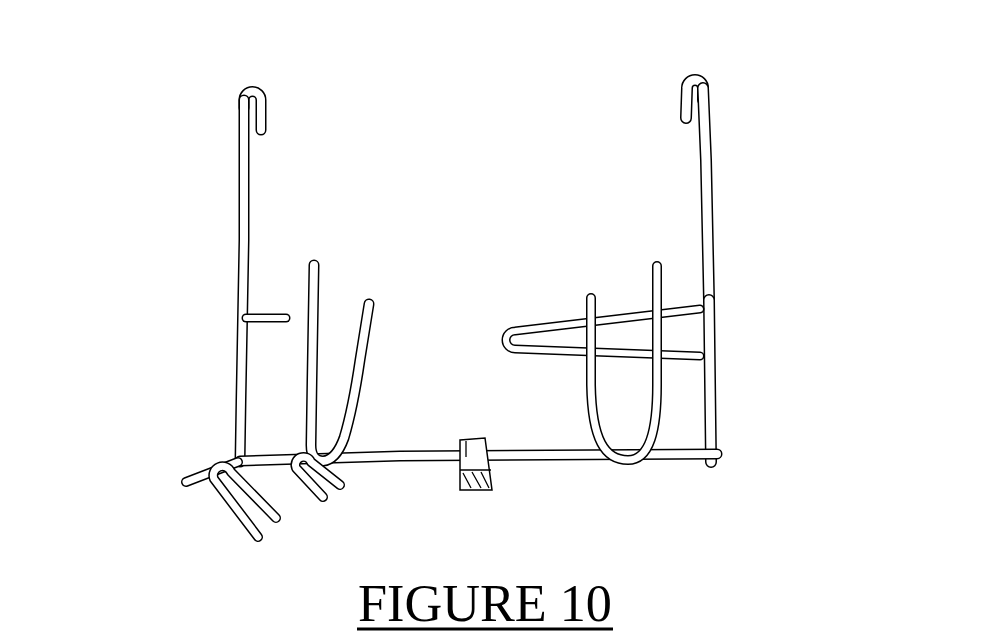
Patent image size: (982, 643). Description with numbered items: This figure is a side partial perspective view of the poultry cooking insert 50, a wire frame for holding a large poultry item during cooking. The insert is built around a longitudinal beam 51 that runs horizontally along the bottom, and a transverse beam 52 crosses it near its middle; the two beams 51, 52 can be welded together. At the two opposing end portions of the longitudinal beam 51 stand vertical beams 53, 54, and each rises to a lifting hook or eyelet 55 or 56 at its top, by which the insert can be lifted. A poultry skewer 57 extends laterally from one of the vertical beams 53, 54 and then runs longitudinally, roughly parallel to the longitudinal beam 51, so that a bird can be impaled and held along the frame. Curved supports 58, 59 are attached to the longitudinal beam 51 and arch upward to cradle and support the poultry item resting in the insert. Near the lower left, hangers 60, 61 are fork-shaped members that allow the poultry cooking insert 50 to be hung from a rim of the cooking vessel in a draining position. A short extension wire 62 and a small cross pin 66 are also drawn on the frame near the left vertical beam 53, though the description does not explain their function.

The poultry cooking insert 50 is at (716, 246).
The longitudinal beam 51 is at (563, 452).
The transverse beam 52 is at (497, 490).
The vertical beam 53 is at (233, 345).
The vertical beam 54 is at (718, 384).
The lifting hook or eyelet 55 is at (255, 88).
The lifting hook or eyelet 56 is at (700, 78).
The poultry skewer 57 is at (545, 320).
The curved support 58 is at (320, 292).
The curved support 59 is at (647, 270).
The hanger 60 is at (222, 492).
The hanger 61 is at (306, 488).
The extension wire 62 is at (182, 481).
The cross pin 66 is at (268, 312).